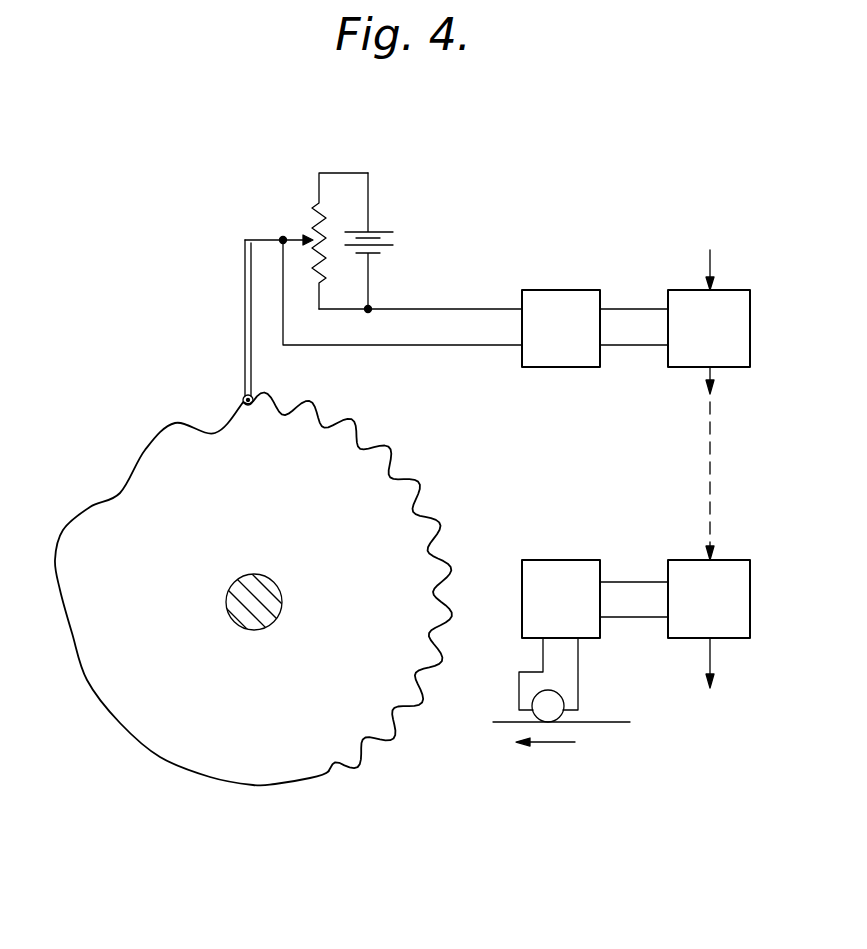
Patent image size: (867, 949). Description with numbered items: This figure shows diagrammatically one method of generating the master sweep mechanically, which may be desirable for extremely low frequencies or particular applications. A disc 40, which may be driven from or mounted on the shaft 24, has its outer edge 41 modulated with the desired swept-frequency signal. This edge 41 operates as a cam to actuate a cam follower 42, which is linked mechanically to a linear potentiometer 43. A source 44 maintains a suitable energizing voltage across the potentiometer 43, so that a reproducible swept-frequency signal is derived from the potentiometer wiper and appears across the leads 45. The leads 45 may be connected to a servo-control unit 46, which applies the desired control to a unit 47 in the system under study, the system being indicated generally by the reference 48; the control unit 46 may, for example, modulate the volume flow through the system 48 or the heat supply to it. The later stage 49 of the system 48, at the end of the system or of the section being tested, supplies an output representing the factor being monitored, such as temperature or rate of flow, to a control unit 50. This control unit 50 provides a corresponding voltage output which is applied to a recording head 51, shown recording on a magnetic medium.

The shaft 24 is at (270, 610).
The disc 40 is at (267, 770).
The outer edge 41 is at (398, 490).
The cam follower 42 is at (243, 400).
The linear potentiometer 43 is at (276, 229).
The source 44 is at (396, 241).
The leads 45 is at (437, 345).
The servo-control unit 46 is at (560, 298).
The unit 47 is at (738, 300).
The system 48 is at (717, 464).
The later stage of the system 49 is at (740, 560).
The control unit 50 is at (557, 560).
The recording head 51 is at (553, 706).